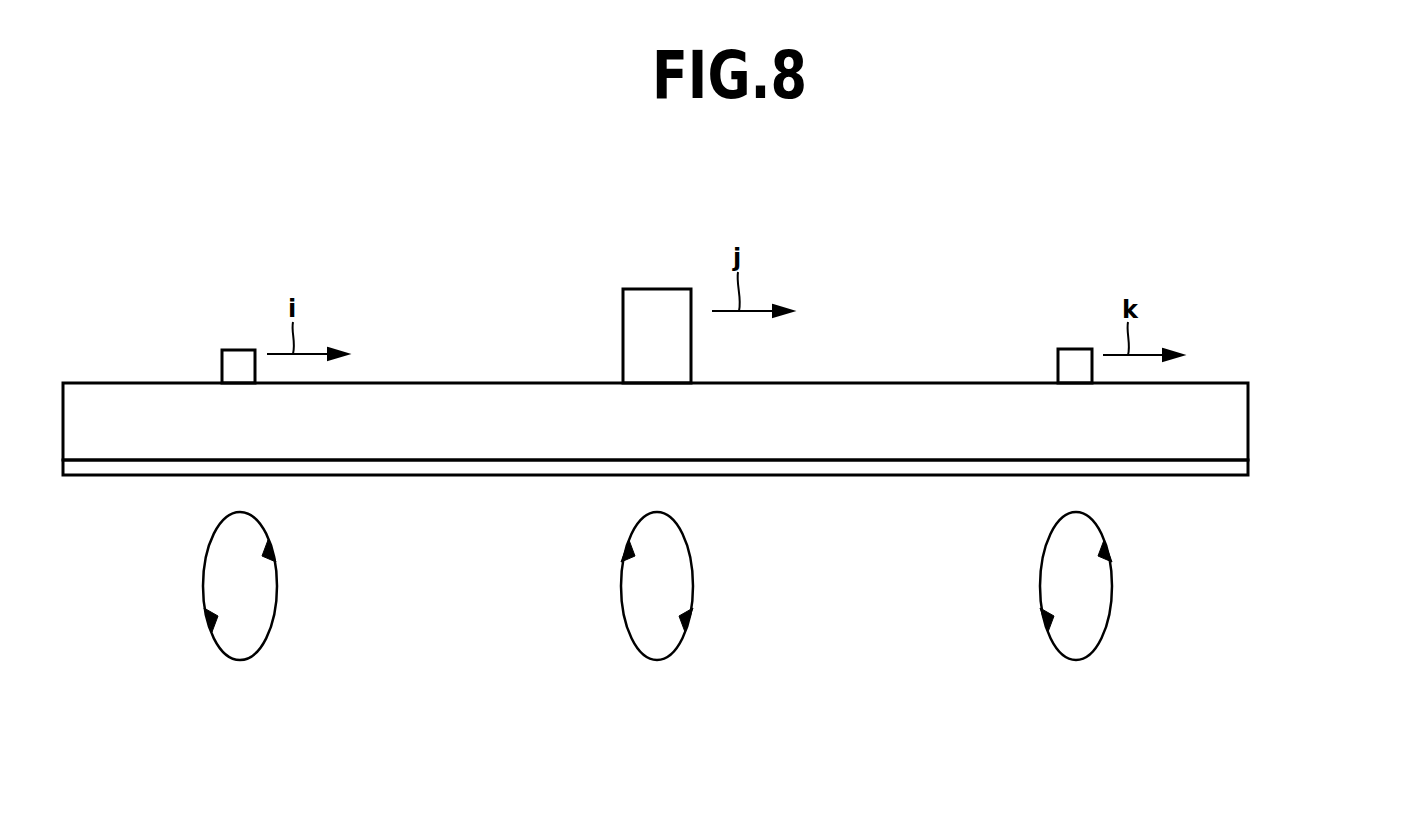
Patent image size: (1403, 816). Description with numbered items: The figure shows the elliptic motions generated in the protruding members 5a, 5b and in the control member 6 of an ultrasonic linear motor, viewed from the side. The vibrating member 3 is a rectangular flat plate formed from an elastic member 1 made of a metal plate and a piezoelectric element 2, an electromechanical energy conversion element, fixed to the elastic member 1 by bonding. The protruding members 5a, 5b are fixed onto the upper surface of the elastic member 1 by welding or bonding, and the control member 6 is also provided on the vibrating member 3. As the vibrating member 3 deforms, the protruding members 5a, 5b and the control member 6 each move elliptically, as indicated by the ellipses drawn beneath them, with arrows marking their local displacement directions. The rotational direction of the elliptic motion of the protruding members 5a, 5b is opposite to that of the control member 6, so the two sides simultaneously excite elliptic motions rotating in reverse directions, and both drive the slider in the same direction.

The elastic member 1 is at (1248, 413).
The piezoelectric element 2 is at (1248, 467).
The vibrating member 3 is at (1300, 438).
The protruding member 5a is at (240, 355).
The protruding member 5b is at (1076, 354).
The control member 6 is at (658, 290).